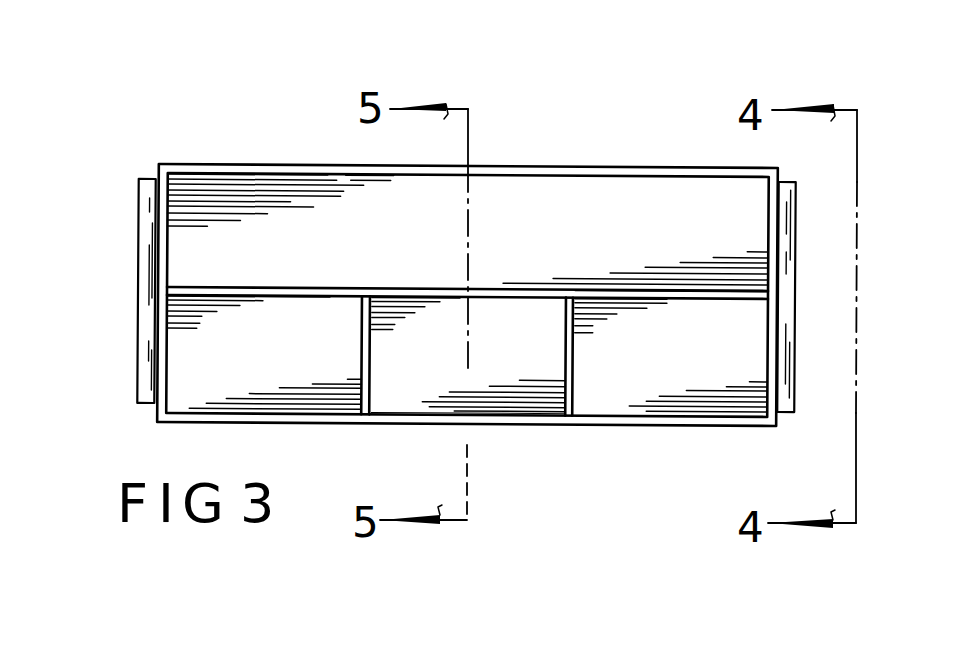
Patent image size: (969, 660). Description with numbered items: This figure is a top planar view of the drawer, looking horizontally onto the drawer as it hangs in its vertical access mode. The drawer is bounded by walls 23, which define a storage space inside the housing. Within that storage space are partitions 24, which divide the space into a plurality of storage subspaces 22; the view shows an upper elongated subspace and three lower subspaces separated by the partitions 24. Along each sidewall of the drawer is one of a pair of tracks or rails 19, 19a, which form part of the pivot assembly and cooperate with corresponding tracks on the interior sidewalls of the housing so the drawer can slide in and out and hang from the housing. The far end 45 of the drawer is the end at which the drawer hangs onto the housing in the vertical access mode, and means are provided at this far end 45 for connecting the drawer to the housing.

The track or rail 19 is at (797, 262).
The track or rail 19a is at (148, 260).
The storage subspace 22 is at (291, 232).
The wall 23 is at (165, 213).
The partition 24 is at (593, 290).
The far end 45 is at (490, 167).